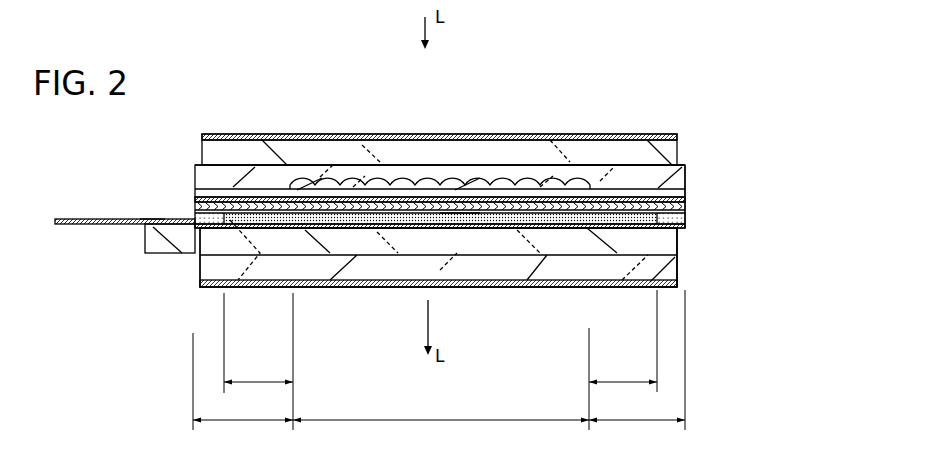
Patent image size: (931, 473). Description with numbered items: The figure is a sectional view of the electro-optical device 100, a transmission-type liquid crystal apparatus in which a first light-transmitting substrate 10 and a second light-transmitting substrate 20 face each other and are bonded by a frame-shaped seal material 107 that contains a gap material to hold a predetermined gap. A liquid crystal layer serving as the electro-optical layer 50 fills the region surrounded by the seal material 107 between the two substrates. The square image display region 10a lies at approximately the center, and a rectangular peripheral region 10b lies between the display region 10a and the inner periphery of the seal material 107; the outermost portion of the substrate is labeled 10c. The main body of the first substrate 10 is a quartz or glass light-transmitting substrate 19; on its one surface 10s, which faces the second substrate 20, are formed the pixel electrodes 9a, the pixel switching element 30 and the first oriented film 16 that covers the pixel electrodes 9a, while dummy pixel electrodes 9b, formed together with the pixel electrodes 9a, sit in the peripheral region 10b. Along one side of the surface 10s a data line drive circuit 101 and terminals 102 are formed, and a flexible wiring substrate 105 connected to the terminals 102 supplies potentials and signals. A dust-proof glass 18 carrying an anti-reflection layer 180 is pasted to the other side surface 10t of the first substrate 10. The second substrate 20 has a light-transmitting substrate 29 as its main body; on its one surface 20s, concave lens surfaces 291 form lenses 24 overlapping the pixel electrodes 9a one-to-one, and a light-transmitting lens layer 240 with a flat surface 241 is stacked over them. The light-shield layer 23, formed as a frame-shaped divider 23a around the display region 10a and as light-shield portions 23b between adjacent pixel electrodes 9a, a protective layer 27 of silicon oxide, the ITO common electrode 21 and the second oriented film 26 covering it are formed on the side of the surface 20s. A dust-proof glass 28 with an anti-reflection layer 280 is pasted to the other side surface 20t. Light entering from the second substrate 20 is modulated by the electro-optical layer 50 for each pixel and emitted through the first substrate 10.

The electro-optical device 100 is at (658, 80).
The first light-transmitting substrate 10 is at (687, 237).
The image display region 10a is at (441, 368).
The peripheral region 10b is at (440, 347).
The edge region of substrate 10c is at (439, 367).
The other side surface of the first substrate 10t is at (344, 229).
The one surface of the first substrate 10s is at (628, 228).
The pixel electrodes 9a is at (463, 225).
The dummy pixel electrodes 9b is at (282, 215).
The first oriented film 16 is at (390, 225).
The dust-proof glass 18 is at (668, 270).
The light-transmitting substrate 19 is at (668, 240).
The anti-reflection layer 180 is at (376, 228).
The second oriented film 26 is at (487, 218).
The electro-optical layer 50 is at (537, 214).
The seal material 107 is at (685, 222).
The data line drive circuit 101 is at (195, 226).
The terminals 102 is at (152, 219).
The flexible wiring substrate 105 is at (70, 226).
The second light-transmitting substrate 20 is at (687, 165).
The pixel switching element 30 is at (440, 177).
The other side surface of the second substrate 20t is at (552, 167).
The one surface of the second substrate 20s is at (614, 184).
The common electrode 21 is at (460, 178).
The light-shield layer 23 is at (375, 60).
The divider 23a is at (288, 187).
The light-shield layer 23b is at (360, 187).
The lenses 24 is at (440, 134).
The lens surfaces 291 is at (418, 178).
The protective layer 27 is at (390, 188).
The flat surface 241 is at (435, 160).
The lens layer 240 is at (515, 187).
The anti-reflection layer 280 is at (505, 170).
The dust-proof glass 28 is at (667, 152).
The light-transmitting substrate 29 is at (637, 178).